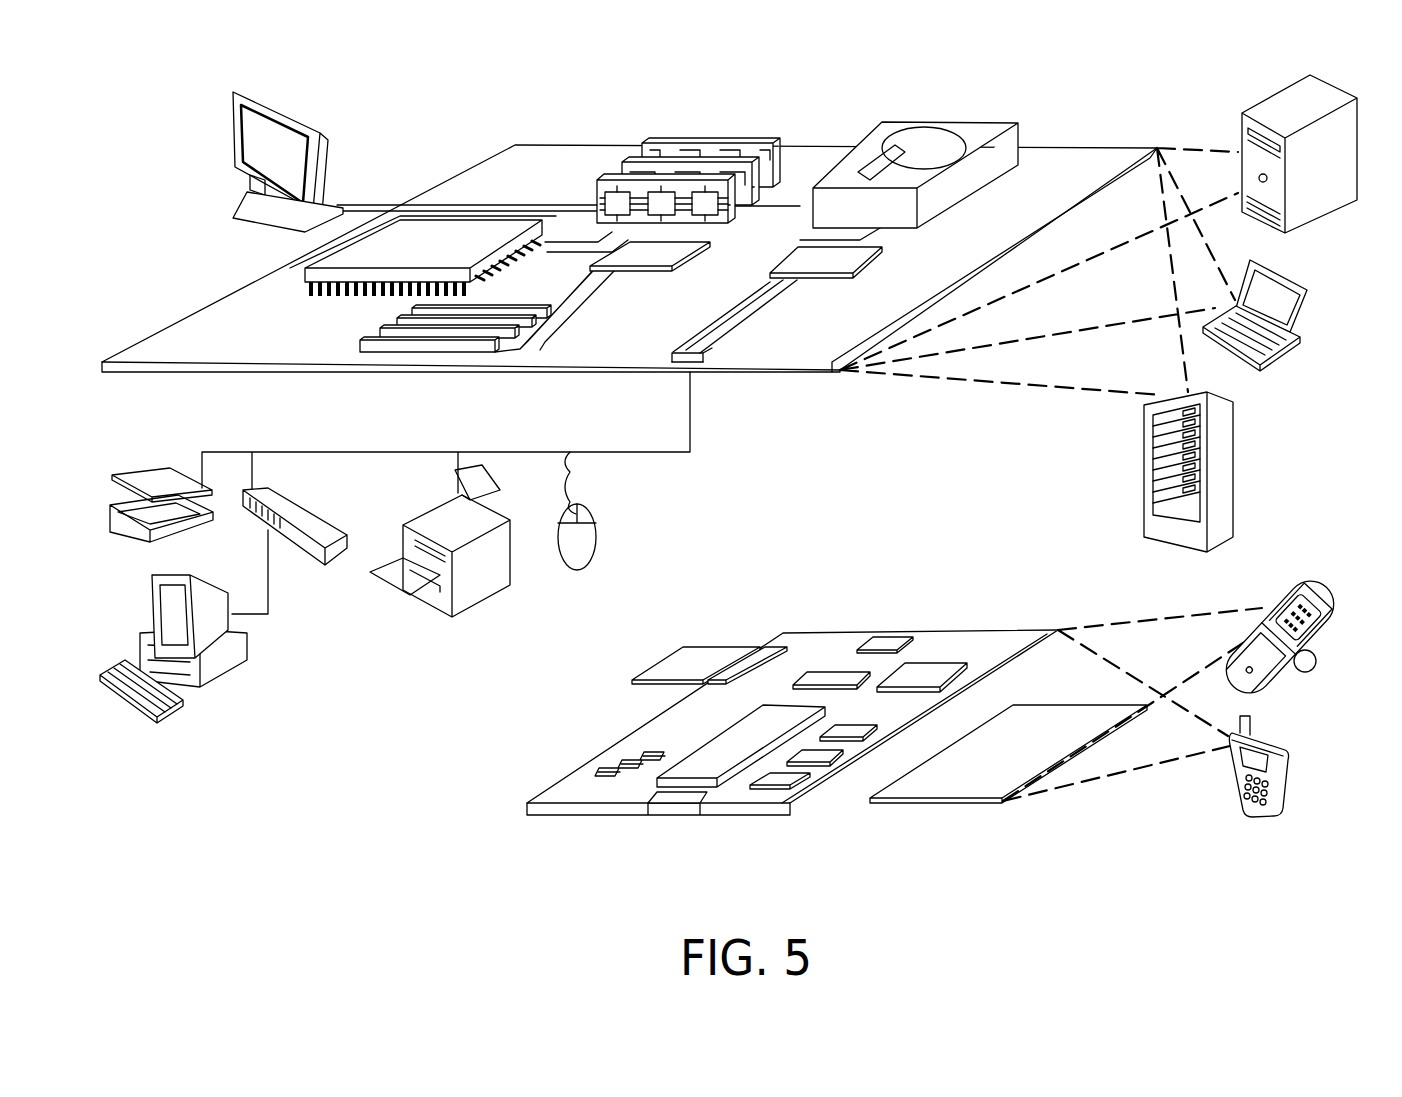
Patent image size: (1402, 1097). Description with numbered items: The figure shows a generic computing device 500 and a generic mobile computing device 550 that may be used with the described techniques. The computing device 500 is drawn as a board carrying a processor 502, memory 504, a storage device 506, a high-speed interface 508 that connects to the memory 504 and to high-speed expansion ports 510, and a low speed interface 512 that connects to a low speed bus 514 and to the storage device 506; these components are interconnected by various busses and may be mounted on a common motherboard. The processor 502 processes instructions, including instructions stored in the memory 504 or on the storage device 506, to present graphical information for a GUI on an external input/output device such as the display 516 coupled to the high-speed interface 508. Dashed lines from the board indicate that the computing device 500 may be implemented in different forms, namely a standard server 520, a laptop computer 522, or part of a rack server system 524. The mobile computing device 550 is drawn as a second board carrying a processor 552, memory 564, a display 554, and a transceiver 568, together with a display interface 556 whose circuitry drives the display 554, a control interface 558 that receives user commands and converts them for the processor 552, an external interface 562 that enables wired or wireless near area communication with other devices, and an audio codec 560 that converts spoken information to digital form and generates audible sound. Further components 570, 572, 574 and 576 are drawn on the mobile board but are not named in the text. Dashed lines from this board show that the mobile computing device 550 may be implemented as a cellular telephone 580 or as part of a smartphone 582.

The computing device 500 is at (436, 112).
The processor 502 is at (305, 276).
The memory 504 is at (660, 140).
The storage device 506 is at (906, 128).
The high-speed interface 508 is at (623, 255).
The high-speed expansion ports 510 is at (378, 333).
The low speed interface 512 is at (812, 258).
The low speed bus 514 is at (703, 362).
The display 516 is at (240, 92).
The standard server 520 is at (1240, 133).
The laptop computer 522 is at (1312, 292).
The rack server system 524 is at (1145, 495).
The mobile computing device 550 is at (503, 812).
The processor 552 is at (713, 770).
The display 554 is at (965, 790).
The display interface 556 is at (790, 785).
The control interface 558 is at (833, 765).
The audio codec 560 is at (848, 737).
The external interface 562 is at (680, 803).
The memory 564 is at (622, 757).
The transceiver 568 is at (920, 683).
The wireless module 570 is at (893, 637).
The antenna 572 is at (760, 648).
The transceiver 574 is at (688, 648).
The power module 576 is at (842, 670).
The cellular telephone 580 is at (1293, 600).
The smartphone 582 is at (1220, 795).